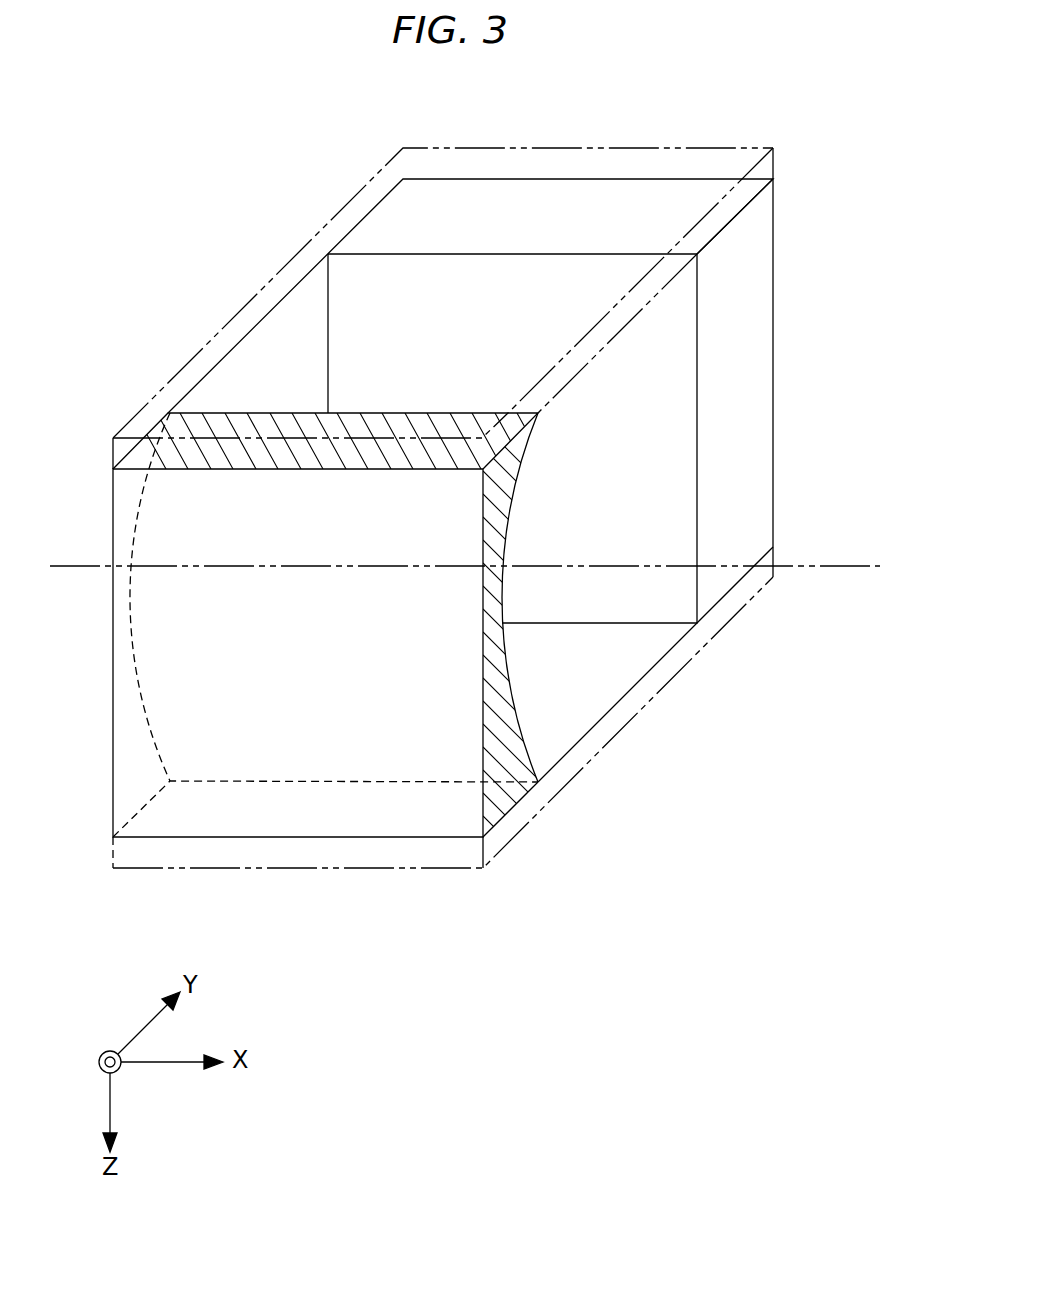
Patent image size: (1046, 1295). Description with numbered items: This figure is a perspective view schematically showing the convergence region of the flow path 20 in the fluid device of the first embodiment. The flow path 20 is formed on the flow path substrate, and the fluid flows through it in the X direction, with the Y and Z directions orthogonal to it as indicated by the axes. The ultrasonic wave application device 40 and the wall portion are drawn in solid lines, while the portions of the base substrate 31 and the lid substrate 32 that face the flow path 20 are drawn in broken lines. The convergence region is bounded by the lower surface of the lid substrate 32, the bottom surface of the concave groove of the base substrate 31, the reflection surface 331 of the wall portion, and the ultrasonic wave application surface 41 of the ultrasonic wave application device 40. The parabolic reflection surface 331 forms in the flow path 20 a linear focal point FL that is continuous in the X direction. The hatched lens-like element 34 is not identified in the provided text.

The flow path 20 is at (250, 198).
The base substrate 31 is at (653, 700).
The lid substrate 32 is at (237, 313).
The lens 34 is at (507, 772).
The reflection surface 331 is at (507, 682).
The ultrasonic wave application device 40 is at (577, 178).
The ultrasonic wave application surface 41 is at (673, 343).
The linear focal point FL is at (860, 565).